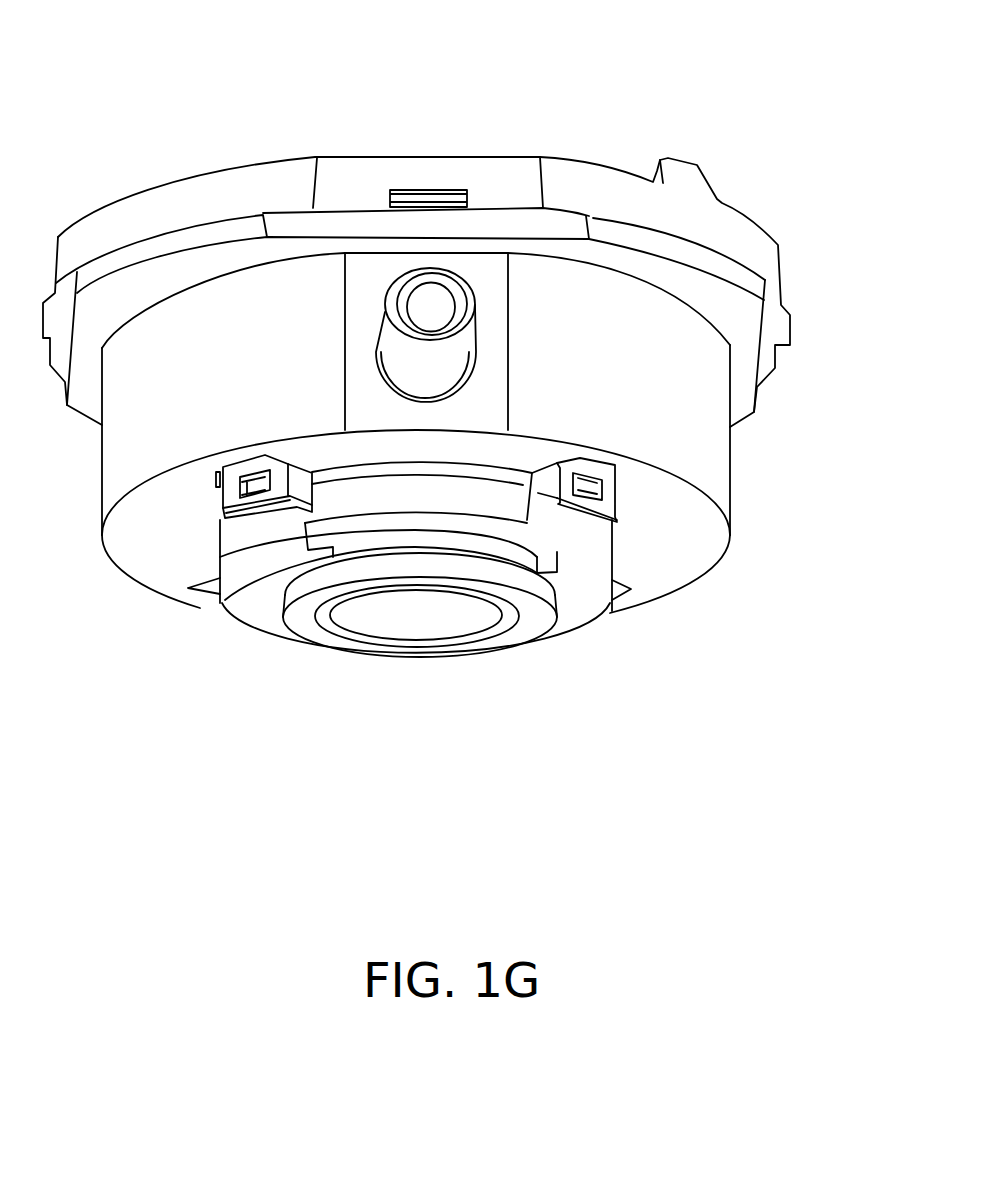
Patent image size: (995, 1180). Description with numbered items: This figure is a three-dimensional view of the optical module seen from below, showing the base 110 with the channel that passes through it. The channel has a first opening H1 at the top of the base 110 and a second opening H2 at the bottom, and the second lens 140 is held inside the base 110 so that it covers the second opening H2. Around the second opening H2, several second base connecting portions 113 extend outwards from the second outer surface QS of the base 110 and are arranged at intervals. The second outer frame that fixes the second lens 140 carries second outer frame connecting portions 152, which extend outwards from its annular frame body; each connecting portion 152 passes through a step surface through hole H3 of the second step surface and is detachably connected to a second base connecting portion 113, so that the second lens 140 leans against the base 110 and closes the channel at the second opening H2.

The first opening H1 is at (483, 139).
The base 110 is at (700, 362).
The second base connecting portion 113 is at (720, 554).
The second outer frame connecting portion 152 is at (600, 472).
The step surface through hole H3 is at (216, 474).
The second outer surface QS is at (589, 478).
The second opening H2 is at (373, 680).
The second lens 140 is at (430, 623).